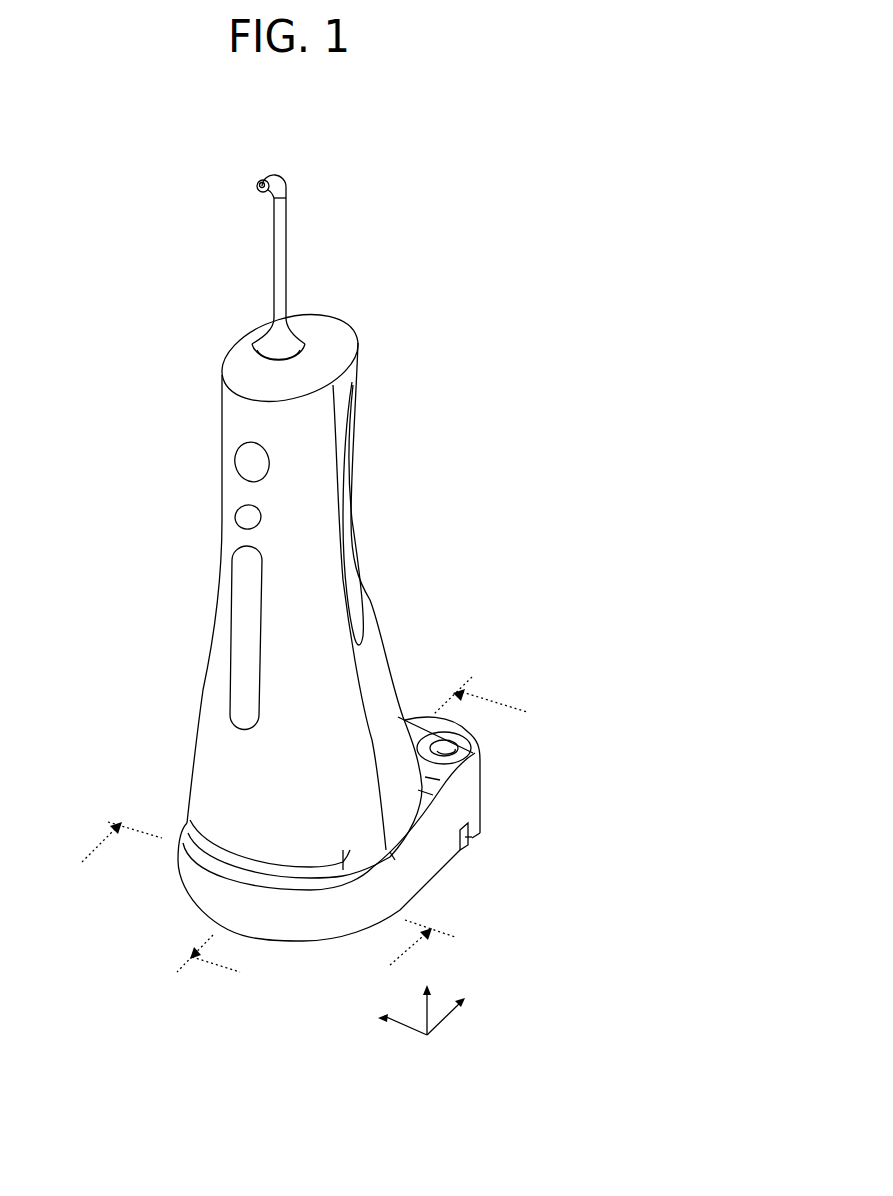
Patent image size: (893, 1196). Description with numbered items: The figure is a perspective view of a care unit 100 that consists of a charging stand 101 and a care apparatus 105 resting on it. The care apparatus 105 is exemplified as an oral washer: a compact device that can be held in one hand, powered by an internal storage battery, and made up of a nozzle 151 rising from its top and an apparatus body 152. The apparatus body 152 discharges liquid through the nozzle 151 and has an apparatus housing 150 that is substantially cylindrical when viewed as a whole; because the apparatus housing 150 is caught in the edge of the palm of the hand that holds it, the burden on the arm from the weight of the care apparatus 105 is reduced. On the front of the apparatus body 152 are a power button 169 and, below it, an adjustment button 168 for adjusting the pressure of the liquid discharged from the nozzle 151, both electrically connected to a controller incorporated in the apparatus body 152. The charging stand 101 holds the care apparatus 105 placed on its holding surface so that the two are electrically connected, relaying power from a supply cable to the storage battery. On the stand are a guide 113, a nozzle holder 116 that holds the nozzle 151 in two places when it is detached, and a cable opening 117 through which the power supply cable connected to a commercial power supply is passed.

The care unit 100 is at (423, 204).
The nozzle 151 is at (273, 275).
The care apparatus 105 is at (223, 393).
The power button 169 is at (250, 462).
The adjustment button 168 is at (250, 515).
The apparatus housing 150 is at (386, 652).
The apparatus body 152 is at (195, 737).
The charging stand 101 is at (185, 877).
The guide 113 is at (478, 742).
The nozzle holder 116 is at (480, 785).
The cable opening 117 is at (472, 838).